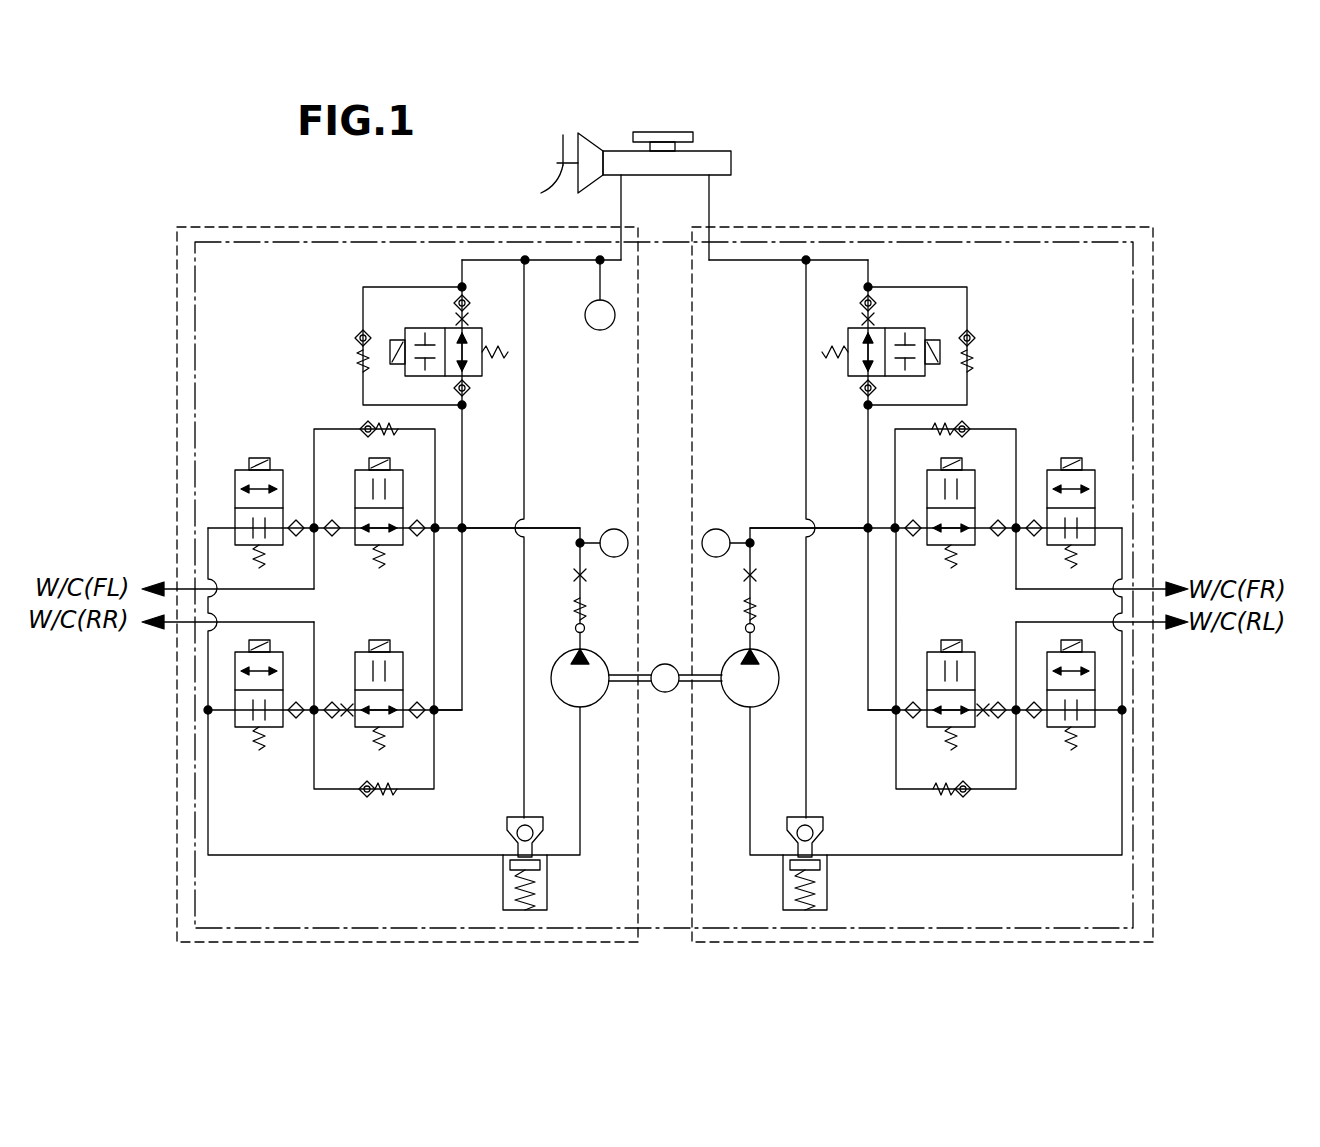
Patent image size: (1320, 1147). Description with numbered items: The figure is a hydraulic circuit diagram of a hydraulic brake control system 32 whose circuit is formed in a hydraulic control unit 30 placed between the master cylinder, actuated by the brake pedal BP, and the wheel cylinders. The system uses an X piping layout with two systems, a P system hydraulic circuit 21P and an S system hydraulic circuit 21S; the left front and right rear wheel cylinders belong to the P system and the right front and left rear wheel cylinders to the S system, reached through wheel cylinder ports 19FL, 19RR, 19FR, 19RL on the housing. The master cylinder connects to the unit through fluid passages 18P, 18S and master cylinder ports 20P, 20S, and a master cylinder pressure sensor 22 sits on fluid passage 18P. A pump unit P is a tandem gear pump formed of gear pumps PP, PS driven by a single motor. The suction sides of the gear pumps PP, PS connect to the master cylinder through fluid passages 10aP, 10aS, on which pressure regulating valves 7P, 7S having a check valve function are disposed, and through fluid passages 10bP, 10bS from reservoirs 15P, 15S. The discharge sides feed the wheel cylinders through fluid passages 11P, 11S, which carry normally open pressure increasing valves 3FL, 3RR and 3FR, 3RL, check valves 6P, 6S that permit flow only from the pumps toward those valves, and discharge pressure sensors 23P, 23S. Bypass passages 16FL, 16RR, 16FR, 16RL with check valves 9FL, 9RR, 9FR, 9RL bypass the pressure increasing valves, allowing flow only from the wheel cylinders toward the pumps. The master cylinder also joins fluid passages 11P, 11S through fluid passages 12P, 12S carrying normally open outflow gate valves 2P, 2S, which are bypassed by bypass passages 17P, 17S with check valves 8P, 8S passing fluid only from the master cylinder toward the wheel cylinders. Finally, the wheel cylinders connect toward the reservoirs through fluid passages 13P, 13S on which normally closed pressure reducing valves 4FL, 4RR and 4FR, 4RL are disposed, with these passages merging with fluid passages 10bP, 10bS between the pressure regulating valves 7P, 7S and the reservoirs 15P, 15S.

The hydraulic control unit 30 is at (1076, 236).
The hydraulic brake control system 32 is at (946, 212).
The P system hydraulic circuit 21P is at (243, 226).
The S system hydraulic circuit 21S is at (1017, 226).
The brake pedal BP is at (544, 190).
The master cylinder port 20P is at (617, 238).
The master cylinder port 20S is at (712, 240).
The fluid passage 18P is at (470, 258).
The fluid passage 18S is at (806, 258).
The master cylinder pressure sensor 22 is at (600, 331).
The bypass passage 17P is at (363, 298).
The bypass passage 17S is at (967, 300).
The check valve 8P is at (358, 337).
The check valve 8S is at (972, 338).
The outflow gate valve 2P is at (464, 322).
The outflow gate valve 2S is at (868, 330).
The fluid passage 12P is at (463, 465).
The fluid passage 12S is at (867, 455).
The fluid passage 10aP is at (525, 390).
The fluid passage 10aS is at (805, 390).
The bypass passage 16FL is at (324, 428).
The bypass passage 16FR is at (1008, 428).
The bypass passage 16RR is at (432, 792).
The bypass passage 16RL is at (900, 792).
The check valve 9FL is at (364, 427).
The check valve 9FR is at (964, 427).
The check valve 9RR is at (363, 792).
The check valve 9RL is at (965, 792).
The pressure reducing valve 4FL is at (244, 470).
The pressure reducing valve 4FR is at (1084, 470).
The pressure reducing valve 4RR is at (244, 740).
The pressure reducing valve 4RL is at (1086, 740).
The pressure increasing valve 3FL is at (358, 550).
The pressure increasing valve 3FR is at (974, 550).
The pressure increasing valve 3RR is at (357, 660).
The pressure increasing valve 3RL is at (987, 646).
The wheel cylinder port 19FL is at (200, 586).
The wheel cylinder port 19FR is at (1130, 586).
The wheel cylinder port 19RR is at (200, 625).
The wheel cylinder port 19RL is at (1130, 625).
The fluid passage 13P is at (261, 854).
The fluid passage 13S is at (1071, 854).
The fluid passage 11P is at (579, 526).
The fluid passage 11S is at (770, 505).
The check valve 6P is at (575, 628).
The check valve 6S is at (755, 628).
The discharge pressure sensor 23P is at (612, 528).
The discharge pressure sensor 23S is at (716, 528).
The gear pump PP is at (606, 660).
The gear pump PS is at (726, 662).
The pump unit P is at (663, 652).
The fluid passage 10bP is at (579, 858).
The fluid passage 10bS is at (752, 858).
The pressure regulating valve 7P is at (516, 816).
The pressure regulating valve 7S is at (814, 816).
The reservoir 15P is at (503, 878).
The reservoir 15S is at (827, 878).